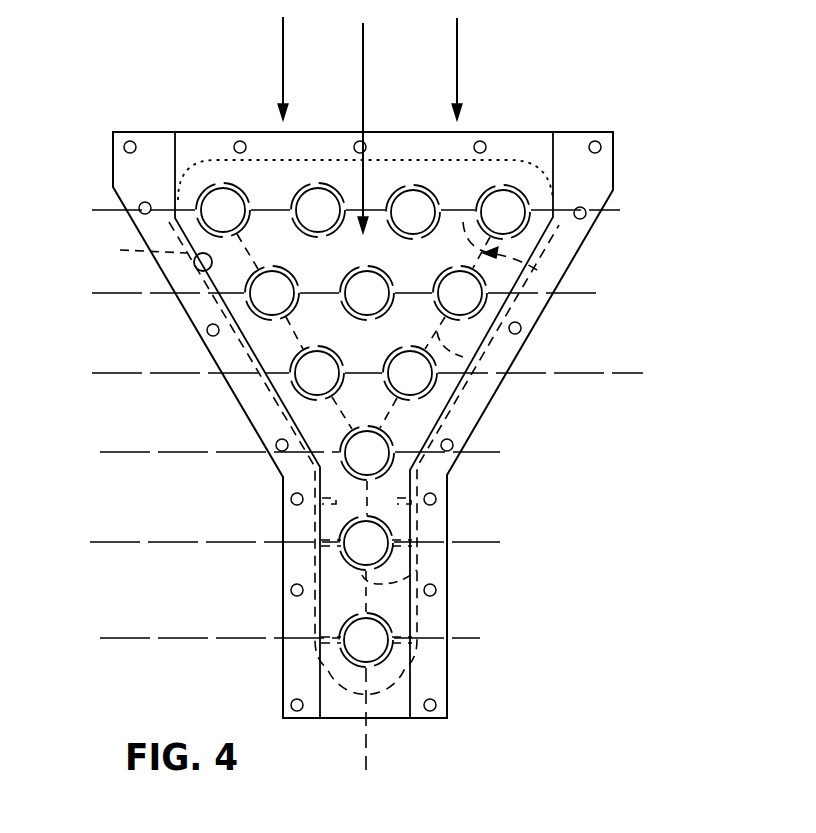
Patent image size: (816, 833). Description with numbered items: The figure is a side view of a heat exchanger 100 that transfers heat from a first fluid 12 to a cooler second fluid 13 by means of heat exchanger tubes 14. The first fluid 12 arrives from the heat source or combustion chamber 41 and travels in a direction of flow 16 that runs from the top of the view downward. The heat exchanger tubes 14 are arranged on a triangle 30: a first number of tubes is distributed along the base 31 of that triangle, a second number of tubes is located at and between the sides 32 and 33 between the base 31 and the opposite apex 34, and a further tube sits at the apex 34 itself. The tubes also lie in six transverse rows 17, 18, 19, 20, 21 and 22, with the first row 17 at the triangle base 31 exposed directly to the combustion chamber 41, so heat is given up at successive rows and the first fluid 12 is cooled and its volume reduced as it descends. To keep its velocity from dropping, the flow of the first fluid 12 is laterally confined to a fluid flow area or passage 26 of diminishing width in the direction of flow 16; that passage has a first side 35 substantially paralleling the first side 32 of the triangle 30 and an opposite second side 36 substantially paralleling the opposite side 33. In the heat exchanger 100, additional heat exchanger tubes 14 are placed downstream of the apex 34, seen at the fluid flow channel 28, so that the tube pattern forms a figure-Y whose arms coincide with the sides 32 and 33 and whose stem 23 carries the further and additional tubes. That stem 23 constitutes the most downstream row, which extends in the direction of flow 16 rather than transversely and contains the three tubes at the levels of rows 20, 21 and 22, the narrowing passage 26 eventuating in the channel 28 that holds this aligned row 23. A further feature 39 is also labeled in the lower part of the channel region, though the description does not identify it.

The first fluid 12 is at (283, 58).
The second fluid 13 is at (527, 207).
The heat exchanger tubes 14 is at (340, 454).
The direction of flow of the first fluid 16 is at (363, 40).
The first row of heat exchanger tubes 17 is at (339, 210).
The second row of heat exchanger tubes 18 is at (330, 292).
The third row of heat exchanger tubes 19 is at (350, 375).
The fourth row of heat exchanger tubes 20 is at (281, 455).
The fifth row of heat exchanger tubes 21 is at (276, 545).
The sixth row of heat exchanger tubes 22 is at (272, 640).
The stem of the figure-Y 23 is at (366, 762).
The fluid flow area or passage 26 is at (258, 333).
The fluid flow channel with additional heat exchanger tubes 28 is at (333, 582).
The triangle 30 is at (540, 272).
The base of the triangle 31 is at (463, 218).
The first side of the triangle 32 is at (137, 250).
The second side of the triangle 33 is at (463, 357).
The apex of the triangle 34 is at (340, 454).
The first side of the fluid flow passage 35 is at (200, 256).
The second side of the fluid flow passage 36 is at (500, 328).
The coolant passage 39 is at (382, 585).
The combustion chamber 41 is at (423, 62).
The heat exchanger 100 is at (226, 403).